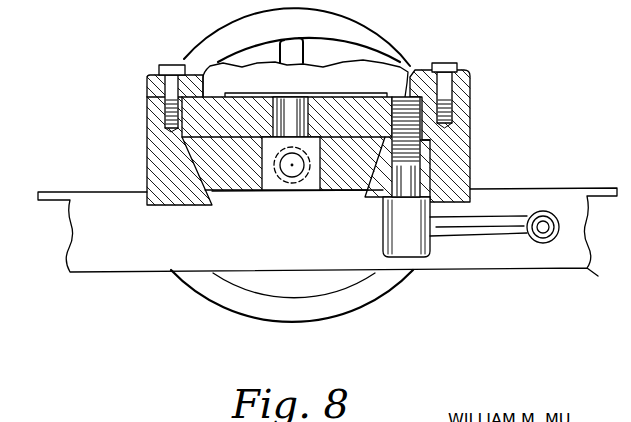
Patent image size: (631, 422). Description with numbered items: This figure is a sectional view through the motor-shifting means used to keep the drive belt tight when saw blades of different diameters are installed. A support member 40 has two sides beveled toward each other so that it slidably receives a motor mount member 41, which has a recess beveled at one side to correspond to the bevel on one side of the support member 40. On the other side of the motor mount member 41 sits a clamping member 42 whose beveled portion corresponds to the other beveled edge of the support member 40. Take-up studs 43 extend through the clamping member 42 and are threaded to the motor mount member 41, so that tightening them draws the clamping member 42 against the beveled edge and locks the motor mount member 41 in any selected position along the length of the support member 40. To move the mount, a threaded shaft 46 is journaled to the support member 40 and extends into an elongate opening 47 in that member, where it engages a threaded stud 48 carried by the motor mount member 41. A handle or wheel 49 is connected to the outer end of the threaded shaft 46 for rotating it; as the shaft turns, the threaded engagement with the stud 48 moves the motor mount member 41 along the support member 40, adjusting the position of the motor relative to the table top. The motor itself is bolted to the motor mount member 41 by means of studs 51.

The support member 40 is at (240, 191).
The motor mount member 41 is at (147, 115).
The clamping member 42 is at (371, 192).
The take-up studs 43 is at (406, 100).
The threaded shaft 46 is at (289, 170).
The elongate opening 47 is at (313, 178).
The threaded stud 48 is at (270, 175).
The handle or wheel 49 is at (294, 312).
The studs 51 is at (163, 65).